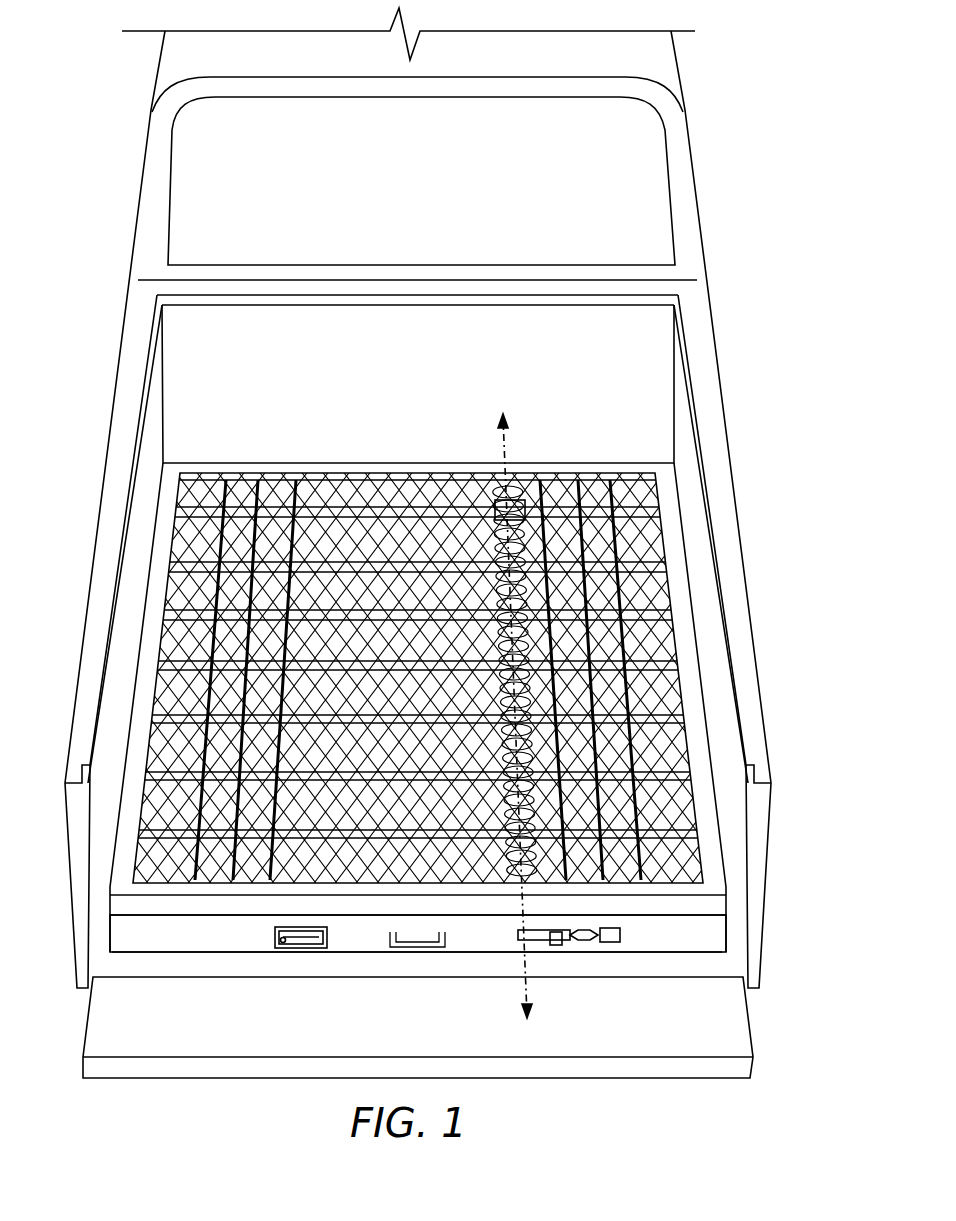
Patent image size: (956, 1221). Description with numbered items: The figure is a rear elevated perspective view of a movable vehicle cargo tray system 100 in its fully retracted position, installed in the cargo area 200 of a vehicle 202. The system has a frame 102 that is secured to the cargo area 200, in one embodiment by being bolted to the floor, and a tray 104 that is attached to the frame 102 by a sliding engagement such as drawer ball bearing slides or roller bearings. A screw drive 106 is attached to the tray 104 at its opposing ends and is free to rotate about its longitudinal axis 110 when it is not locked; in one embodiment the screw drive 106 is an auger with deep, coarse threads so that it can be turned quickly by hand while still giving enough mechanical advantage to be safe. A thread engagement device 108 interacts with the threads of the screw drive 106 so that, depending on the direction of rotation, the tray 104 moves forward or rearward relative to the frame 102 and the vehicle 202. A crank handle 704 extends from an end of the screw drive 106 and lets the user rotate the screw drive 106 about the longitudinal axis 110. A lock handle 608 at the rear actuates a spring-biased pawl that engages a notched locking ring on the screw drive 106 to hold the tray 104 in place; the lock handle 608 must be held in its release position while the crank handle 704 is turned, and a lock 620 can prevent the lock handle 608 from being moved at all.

The movable vehicle cargo tray system 100 is at (481, 695).
The frame 102 is at (242, 538).
The tray 104 is at (223, 910).
The screw drive 106 is at (527, 645).
The thread engagement device 108 is at (470, 882).
The longitudinal axis 110 is at (522, 992).
The cargo area 200 is at (148, 518).
The vehicle 202 is at (686, 243).
The lock handle 608 is at (307, 937).
The lock 620 is at (281, 940).
The crank handle 704 is at (567, 947).